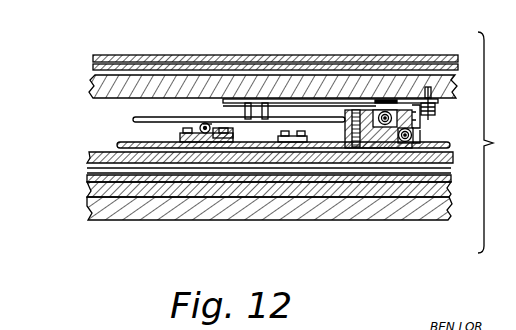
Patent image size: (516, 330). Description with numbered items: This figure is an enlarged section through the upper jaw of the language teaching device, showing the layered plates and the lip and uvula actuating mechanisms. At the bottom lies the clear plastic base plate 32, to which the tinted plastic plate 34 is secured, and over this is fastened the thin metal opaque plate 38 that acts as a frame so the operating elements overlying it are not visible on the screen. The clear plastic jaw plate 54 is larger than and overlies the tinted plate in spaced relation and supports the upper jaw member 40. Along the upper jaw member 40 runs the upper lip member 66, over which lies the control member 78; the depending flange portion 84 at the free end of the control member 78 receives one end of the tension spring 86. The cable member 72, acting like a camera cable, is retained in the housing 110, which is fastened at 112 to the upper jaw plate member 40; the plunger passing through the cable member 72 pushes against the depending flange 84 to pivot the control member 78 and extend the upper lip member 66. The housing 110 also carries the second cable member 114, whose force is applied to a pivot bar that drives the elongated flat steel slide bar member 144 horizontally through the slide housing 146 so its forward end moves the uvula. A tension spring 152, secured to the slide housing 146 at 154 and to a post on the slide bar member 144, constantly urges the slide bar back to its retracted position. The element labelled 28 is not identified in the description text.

The top plate 28 is at (306, 79).
The control member 78 is at (283, 99).
The upper lip member 66 is at (133, 119).
The housing 110 is at (384, 148).
The fastening point of housing 112 is at (356, 109).
The cable member 72 is at (384, 110).
The depending flange portion 84 is at (405, 128).
The second cable member 114 is at (405, 144).
The tension spring 86 is at (430, 88).
The upper jaw member 40 is at (208, 148).
The slide housing 146 is at (232, 140).
The slide bar member 144 is at (201, 125).
The tension spring 152 is at (209, 124).
The securing point of tension spring 154 is at (221, 127).
The thin metal opaque plate 38 is at (110, 174).
The clear plastic jaw plate 54 is at (253, 176).
The tinted plastic plate 34 is at (147, 174).
The base plate 32 is at (186, 205).